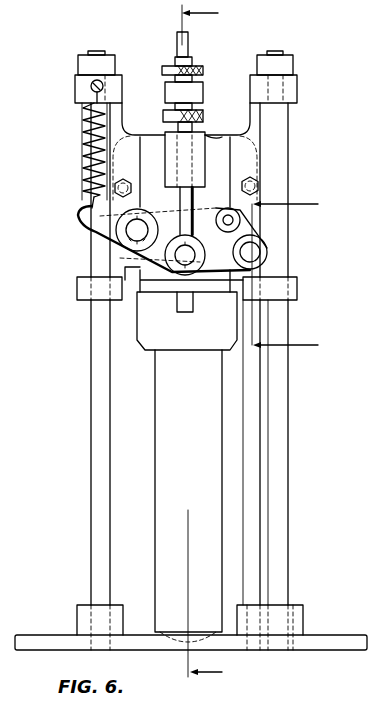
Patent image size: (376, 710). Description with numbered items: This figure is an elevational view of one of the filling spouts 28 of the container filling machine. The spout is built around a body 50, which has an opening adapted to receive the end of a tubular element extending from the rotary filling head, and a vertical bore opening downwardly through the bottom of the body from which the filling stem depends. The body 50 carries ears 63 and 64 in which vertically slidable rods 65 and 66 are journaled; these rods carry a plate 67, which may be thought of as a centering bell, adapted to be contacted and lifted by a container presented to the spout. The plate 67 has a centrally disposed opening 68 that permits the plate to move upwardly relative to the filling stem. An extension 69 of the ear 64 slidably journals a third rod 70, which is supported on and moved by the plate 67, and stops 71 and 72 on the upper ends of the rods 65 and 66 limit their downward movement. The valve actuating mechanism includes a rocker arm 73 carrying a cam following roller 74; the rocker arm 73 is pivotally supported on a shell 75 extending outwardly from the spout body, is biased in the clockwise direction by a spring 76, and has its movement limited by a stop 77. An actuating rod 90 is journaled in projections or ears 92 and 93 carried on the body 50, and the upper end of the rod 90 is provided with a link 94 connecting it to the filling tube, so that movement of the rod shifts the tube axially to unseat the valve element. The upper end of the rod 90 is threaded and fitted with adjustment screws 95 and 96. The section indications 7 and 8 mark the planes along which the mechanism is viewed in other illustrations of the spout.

The section line 7- 7 is at (211, 347).
The section line 8- 8 is at (291, 272).
The filling spout 28 is at (153, 395).
The body 50 is at (223, 182).
The ear 63 is at (75, 88).
The ear 64 is at (297, 88).
The rod 65 is at (91, 474).
The rod 66 is at (288, 460).
The plate 67 is at (316, 635).
The opening 68 is at (232, 650).
The extension 69 is at (268, 283).
The third rod 70 is at (252, 392).
The stop 71 is at (78, 60).
The stop 72 is at (293, 60).
The rocker arm 73 is at (78, 220).
The cam following roller 74 is at (217, 288).
The shell 75 is at (127, 232).
The spring 76 is at (80, 153).
The stop 77 is at (241, 218).
The actuating rod 90 is at (177, 50).
The ear 92 is at (198, 147).
The ear 93 is at (165, 288).
The link 94 is at (165, 90).
The adjustment screw 95 is at (196, 68).
The adjustment screw 96 is at (205, 113).